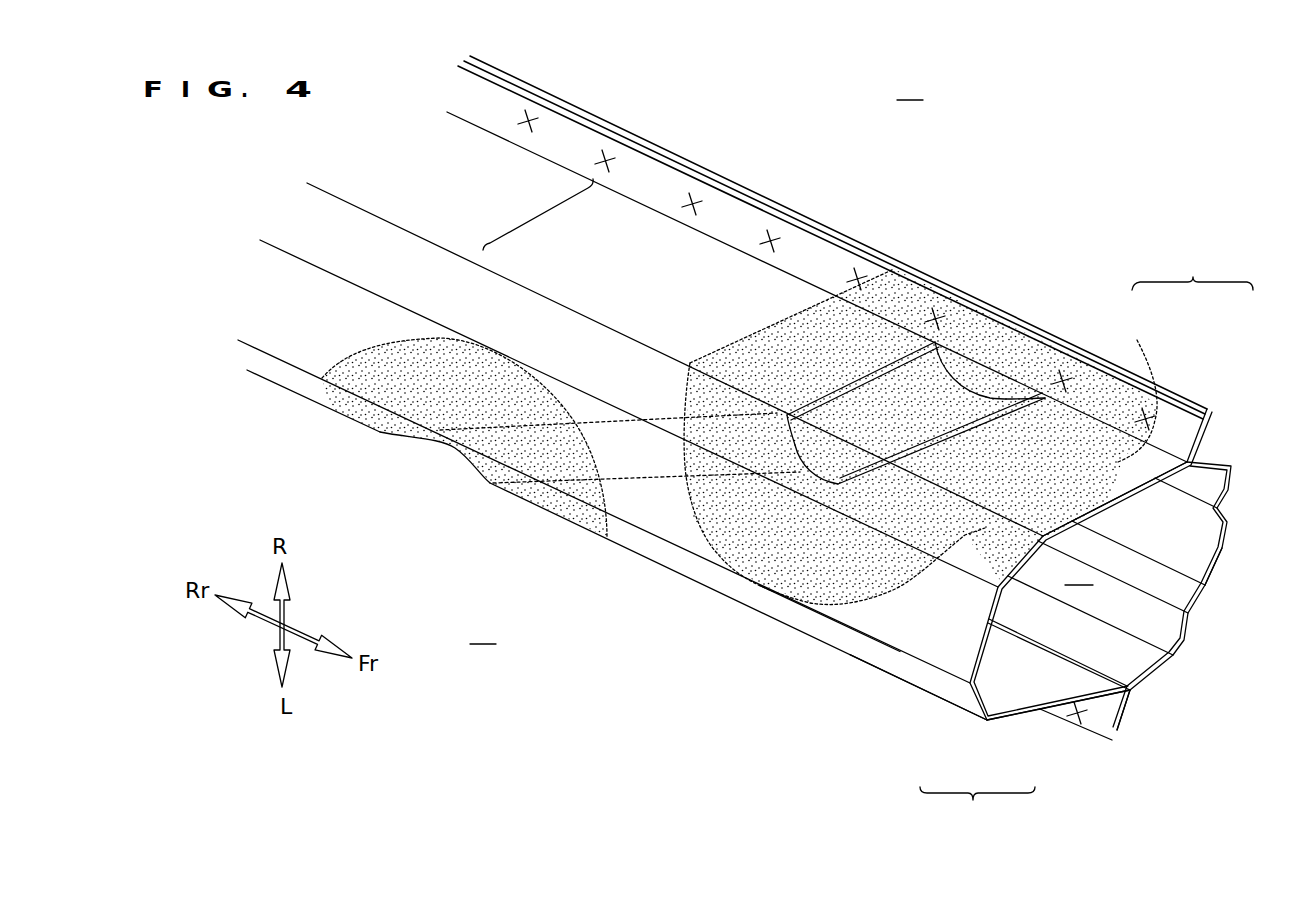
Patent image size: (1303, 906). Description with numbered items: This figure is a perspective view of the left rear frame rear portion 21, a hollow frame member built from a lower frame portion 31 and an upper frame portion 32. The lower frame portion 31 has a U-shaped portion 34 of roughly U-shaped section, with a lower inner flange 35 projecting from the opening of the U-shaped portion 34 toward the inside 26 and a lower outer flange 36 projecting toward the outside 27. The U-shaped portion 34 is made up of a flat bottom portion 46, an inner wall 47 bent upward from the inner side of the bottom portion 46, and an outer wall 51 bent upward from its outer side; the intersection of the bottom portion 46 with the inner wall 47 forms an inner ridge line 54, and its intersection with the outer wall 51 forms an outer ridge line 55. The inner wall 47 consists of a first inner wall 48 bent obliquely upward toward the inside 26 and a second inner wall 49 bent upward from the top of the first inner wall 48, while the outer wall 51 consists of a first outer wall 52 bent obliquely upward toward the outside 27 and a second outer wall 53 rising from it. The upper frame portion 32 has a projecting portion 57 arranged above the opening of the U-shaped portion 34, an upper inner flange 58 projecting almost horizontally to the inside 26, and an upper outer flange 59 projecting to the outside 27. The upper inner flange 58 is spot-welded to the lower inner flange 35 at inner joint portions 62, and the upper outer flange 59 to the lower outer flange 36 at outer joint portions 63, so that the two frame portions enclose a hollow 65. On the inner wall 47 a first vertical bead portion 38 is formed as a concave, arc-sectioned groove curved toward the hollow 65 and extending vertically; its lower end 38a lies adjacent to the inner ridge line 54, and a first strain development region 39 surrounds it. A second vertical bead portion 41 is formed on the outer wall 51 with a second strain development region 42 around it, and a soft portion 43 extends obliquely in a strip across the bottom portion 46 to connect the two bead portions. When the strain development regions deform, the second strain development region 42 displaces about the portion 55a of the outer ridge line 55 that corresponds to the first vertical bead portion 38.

The left rear frame rear portion 21 is at (1192, 269).
The inside 26 is at (911, 89).
The outside 27 is at (484, 633).
The lower frame portion 31 is at (1122, 470).
The upper frame portion 32 is at (1215, 452).
The U-shaped portion 34 is at (634, 559).
The lower inner flange 35 is at (654, 143).
The lower outer flange 36 is at (1102, 730).
The first vertical bead portion 38 is at (952, 400).
The lower end 38a is at (845, 473).
The first strain development region 39 is at (1068, 468).
The second vertical bead portion 41 is at (477, 477).
The second strain development region 42 is at (343, 405).
The soft portion 43 is at (617, 428).
The bottom portion 46 is at (720, 548).
The inner wall 47 is at (540, 212).
The first inner wall 48 is at (510, 313).
The second inner wall 49 is at (582, 280).
The outer wall 51 is at (977, 810).
The first outer wall 52 is at (912, 692).
The second outer wall 53 is at (1035, 718).
The inner ridge line 54 is at (890, 537).
The outer ridge line 55 is at (857, 637).
The portion of the outer ridge line 55a is at (755, 592).
The projecting portion 57 is at (1226, 548).
The upper inner flange 58 is at (707, 172).
The upper outer flange 59 is at (1130, 718).
The inner joint portions 62 is at (773, 235).
The outer joint portions 63 is at (1077, 717).
The hollow 65 is at (1079, 573).